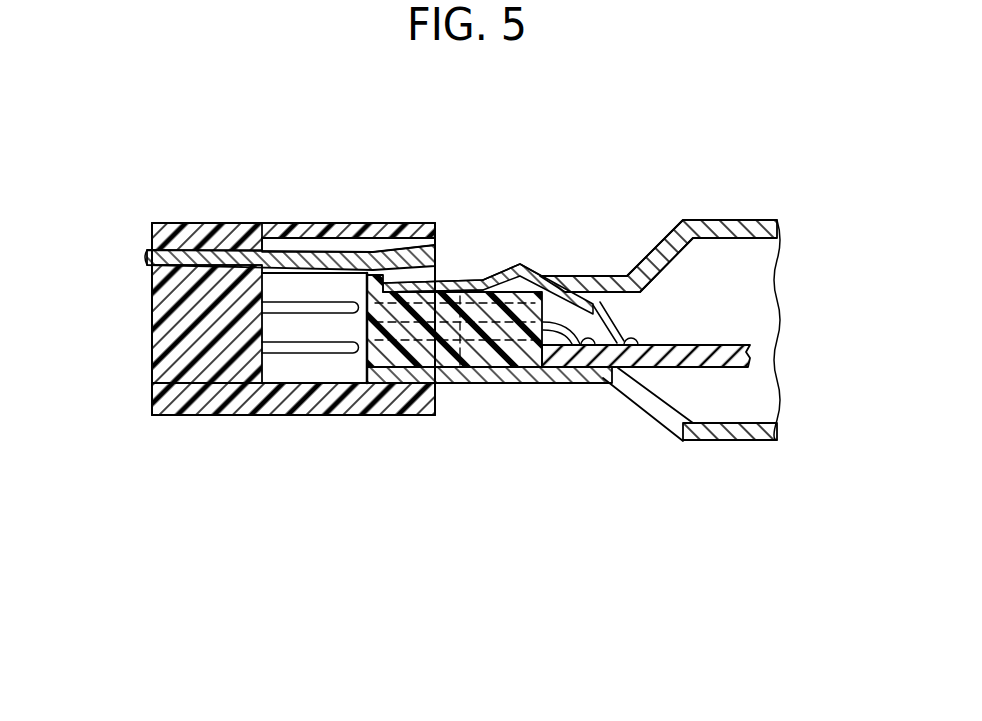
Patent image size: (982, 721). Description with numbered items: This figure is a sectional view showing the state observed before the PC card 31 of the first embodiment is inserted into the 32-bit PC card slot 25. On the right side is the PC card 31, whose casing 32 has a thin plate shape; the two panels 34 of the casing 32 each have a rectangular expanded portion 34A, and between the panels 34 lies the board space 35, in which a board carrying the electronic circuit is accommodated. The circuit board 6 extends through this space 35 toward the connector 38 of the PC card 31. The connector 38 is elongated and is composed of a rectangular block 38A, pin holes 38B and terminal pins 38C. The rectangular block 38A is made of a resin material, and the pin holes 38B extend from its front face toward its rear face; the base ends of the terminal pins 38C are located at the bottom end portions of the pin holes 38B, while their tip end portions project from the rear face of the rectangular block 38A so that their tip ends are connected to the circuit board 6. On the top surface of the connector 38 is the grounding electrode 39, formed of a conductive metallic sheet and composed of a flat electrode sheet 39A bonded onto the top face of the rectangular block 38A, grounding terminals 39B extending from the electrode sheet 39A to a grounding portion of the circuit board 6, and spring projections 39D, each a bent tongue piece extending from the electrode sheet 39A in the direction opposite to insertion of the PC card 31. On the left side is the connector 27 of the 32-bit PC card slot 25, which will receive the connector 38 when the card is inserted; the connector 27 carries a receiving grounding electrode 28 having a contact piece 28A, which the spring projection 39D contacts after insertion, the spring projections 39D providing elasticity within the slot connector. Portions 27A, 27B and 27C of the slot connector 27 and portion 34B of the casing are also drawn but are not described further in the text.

The 32-bit PC card slot 25 is at (194, 168).
The connector 27 is at (163, 415).
The housing body 27A is at (160, 308).
The housing bottom wall 27B is at (318, 372).
The contact terminals 27C is at (285, 352).
The receiving grounding electrode 28 is at (247, 250).
The contact piece 28A is at (373, 263).
The PC card 31 is at (722, 182).
The casing 32 is at (709, 458).
The panels 34 is at (763, 232).
The rectangular expanded portion 34A is at (762, 443).
The inclined housing portion 34B is at (553, 275).
The board space 35 is at (753, 275).
The circuit board 6 is at (737, 360).
The connector 38 is at (520, 370).
The rectangular block 38A is at (488, 372).
The pin holes 38B is at (373, 386).
The terminal pins 38C is at (562, 368).
The grounding electrode 39 is at (483, 277).
The electrode sheet 39A is at (450, 286).
The grounding terminals 39B is at (592, 347).
The spring projections 39D is at (522, 265).